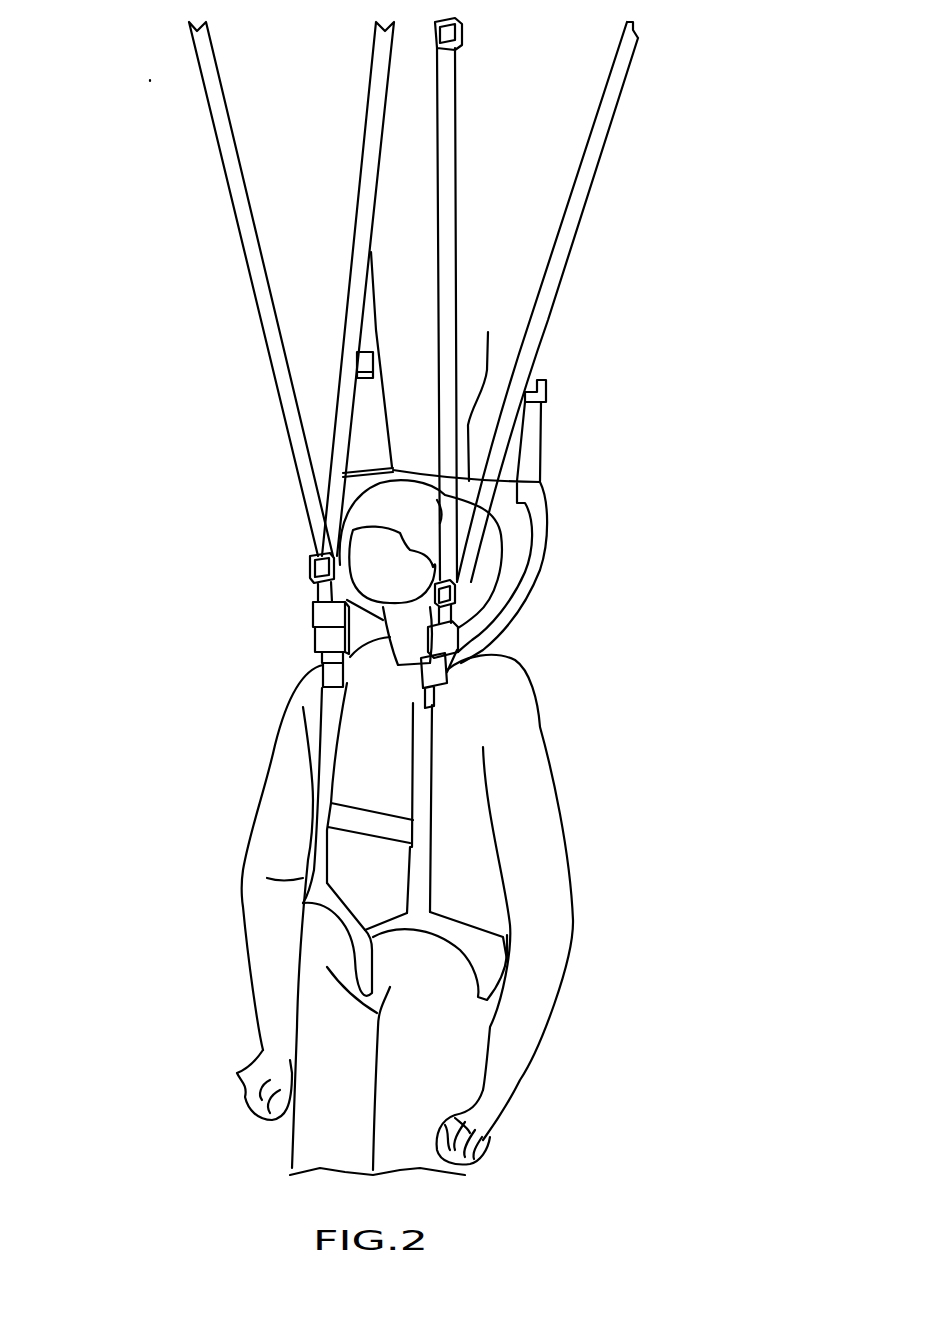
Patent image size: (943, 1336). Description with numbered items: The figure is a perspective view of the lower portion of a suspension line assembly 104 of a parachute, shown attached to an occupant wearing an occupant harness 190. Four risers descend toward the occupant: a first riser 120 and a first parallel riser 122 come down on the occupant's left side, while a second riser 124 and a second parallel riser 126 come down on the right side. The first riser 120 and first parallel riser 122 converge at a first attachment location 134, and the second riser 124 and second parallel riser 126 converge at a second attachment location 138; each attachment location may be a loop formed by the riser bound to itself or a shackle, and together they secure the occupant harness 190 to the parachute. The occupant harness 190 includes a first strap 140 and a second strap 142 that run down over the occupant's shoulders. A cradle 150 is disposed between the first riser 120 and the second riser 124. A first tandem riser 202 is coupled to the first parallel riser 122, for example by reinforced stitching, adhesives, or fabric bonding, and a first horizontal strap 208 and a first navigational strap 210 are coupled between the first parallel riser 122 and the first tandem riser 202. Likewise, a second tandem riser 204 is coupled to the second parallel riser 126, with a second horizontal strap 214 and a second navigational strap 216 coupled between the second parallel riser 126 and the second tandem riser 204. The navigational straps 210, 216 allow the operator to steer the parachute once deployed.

The suspension line assembly 104 is at (146, 80).
The first riser 120 is at (242, 246).
The first parallel riser 122 is at (353, 196).
The second riser 124 is at (450, 217).
The second parallel riser 126 is at (593, 145).
The first attachment location 134 is at (315, 648).
The second attachment location 138 is at (483, 687).
The first strap 140 is at (321, 727).
The second strap 142 is at (432, 738).
The cradle 150 is at (488, 392).
The occupant harness 190 is at (485, 670).
The first tandem riser 202 is at (377, 318).
The second tandem riser 204 is at (533, 436).
The first horizontal strap 208 is at (380, 465).
The first navigational strap 210 is at (368, 354).
The second horizontal strap 214 is at (537, 478).
The second navigational strap 216 is at (546, 388).